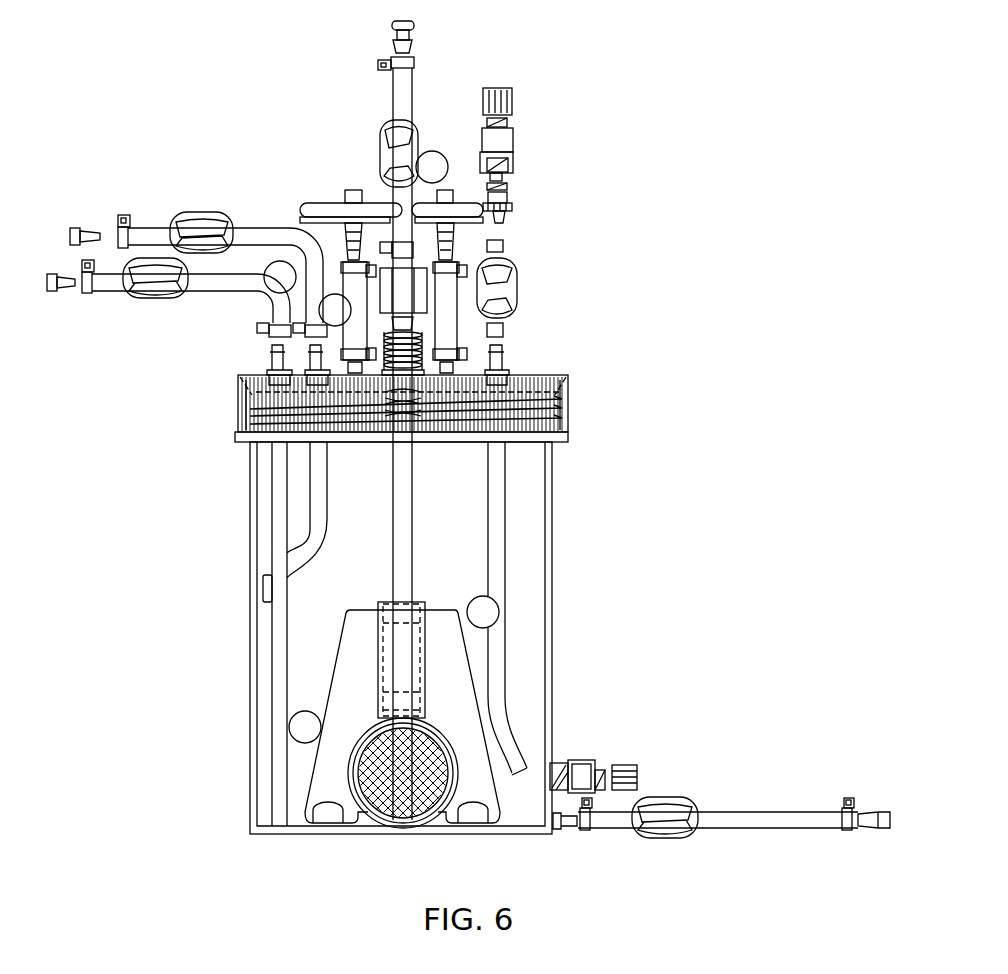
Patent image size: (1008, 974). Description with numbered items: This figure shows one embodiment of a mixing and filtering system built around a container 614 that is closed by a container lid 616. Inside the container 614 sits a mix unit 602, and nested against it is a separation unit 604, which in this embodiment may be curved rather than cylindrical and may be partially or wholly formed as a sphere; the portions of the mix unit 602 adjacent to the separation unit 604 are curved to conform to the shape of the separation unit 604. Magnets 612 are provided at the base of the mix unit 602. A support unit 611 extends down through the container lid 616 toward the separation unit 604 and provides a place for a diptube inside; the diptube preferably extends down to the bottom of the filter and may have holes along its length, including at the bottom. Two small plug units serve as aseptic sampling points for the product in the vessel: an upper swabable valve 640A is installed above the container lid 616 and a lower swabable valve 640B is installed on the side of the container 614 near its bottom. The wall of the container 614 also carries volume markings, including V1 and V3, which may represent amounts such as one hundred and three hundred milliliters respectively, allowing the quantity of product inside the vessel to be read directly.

The mix unit 602 is at (460, 742).
The separation unit 604 is at (427, 747).
The support unit 611 is at (412, 490).
The magnets 612 is at (404, 838).
The container 614 is at (553, 520).
The container lid 616 is at (566, 398).
The upper swabable valve 640A is at (512, 130).
The lower swabable valve 640B is at (595, 762).
The volume marking V1 is at (548, 792).
The volume marking V3 is at (548, 741).